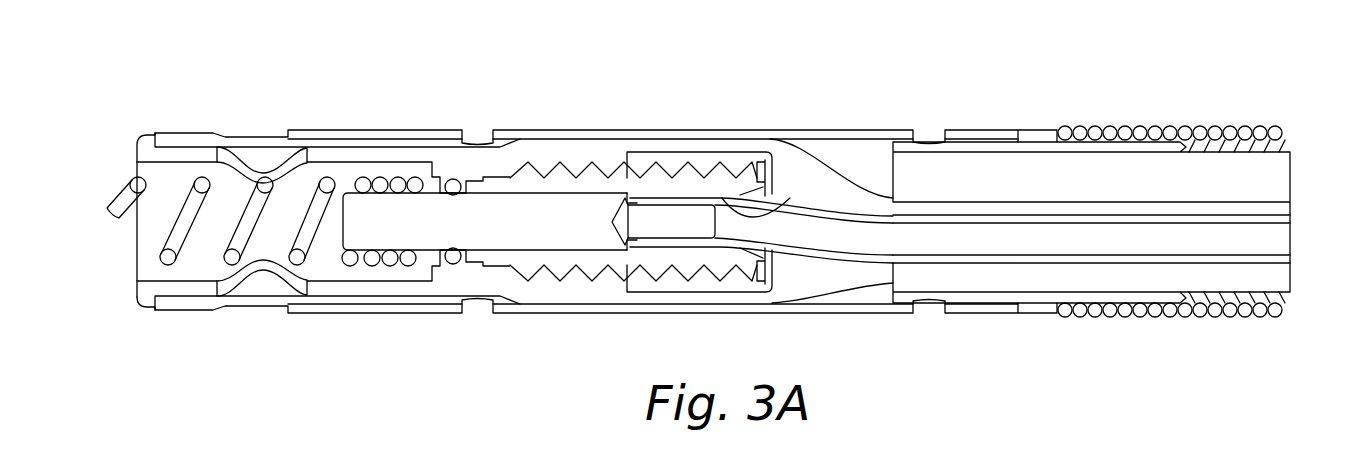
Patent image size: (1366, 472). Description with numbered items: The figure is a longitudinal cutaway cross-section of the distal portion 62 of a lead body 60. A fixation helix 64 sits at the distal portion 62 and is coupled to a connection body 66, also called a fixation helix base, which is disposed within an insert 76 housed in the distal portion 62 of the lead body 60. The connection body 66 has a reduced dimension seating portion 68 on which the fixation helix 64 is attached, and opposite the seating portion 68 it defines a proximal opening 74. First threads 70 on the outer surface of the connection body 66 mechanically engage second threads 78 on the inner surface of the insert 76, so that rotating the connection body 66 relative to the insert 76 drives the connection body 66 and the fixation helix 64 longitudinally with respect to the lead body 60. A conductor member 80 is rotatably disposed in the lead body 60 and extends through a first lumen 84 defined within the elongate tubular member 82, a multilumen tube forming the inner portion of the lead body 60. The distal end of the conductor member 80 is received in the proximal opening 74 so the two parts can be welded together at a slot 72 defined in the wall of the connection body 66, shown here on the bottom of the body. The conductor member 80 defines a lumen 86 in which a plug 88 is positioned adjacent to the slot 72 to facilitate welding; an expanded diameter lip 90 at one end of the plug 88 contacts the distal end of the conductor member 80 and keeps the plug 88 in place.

The lead body 60 is at (303, 78).
The distal portion 62 is at (210, 342).
The fixation helix 64 is at (160, 260).
The connection body 66 is at (500, 212).
The seating portion 68 is at (353, 235).
The first threads 70 is at (715, 190).
The slot 72 is at (660, 253).
The proximal opening 74 is at (780, 203).
The insert 76 is at (452, 282).
The second threads 78 is at (610, 280).
The conductor member 80 is at (965, 260).
The elongate tubular member 82 is at (1125, 167).
The first lumen 84 is at (1127, 255).
The lumen 86 is at (1278, 237).
The plug 88 is at (680, 220).
The lip 90 is at (620, 212).